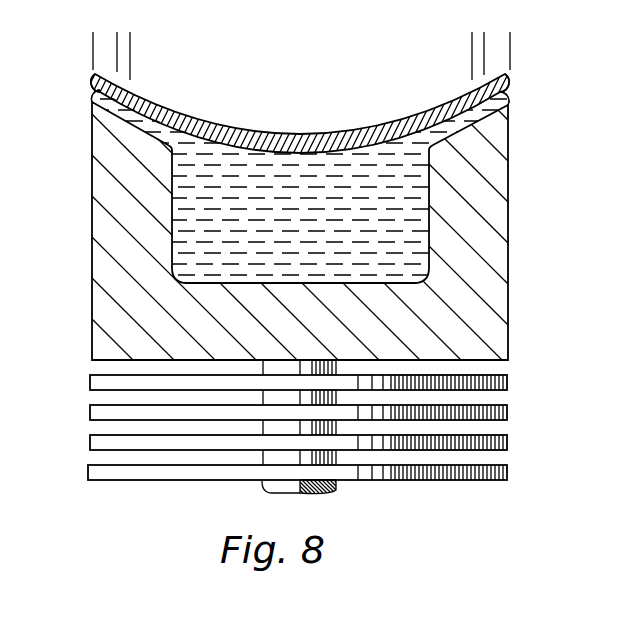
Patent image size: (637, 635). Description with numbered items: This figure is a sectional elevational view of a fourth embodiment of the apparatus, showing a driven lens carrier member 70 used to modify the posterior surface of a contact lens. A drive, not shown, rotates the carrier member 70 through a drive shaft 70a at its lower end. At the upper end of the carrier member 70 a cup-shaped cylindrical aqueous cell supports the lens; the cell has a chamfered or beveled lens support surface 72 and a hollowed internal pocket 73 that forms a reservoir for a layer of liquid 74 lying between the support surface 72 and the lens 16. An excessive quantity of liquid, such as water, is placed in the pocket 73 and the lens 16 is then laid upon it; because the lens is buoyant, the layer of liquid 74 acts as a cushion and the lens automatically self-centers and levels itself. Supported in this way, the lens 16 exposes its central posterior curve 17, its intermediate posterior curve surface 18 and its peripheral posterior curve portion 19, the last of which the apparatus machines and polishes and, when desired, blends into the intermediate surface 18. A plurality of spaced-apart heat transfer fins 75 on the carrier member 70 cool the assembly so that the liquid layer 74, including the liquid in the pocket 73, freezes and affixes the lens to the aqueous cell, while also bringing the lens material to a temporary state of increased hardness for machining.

The lens 16 is at (354, 132).
The central posterior curve 17 is at (510, 30).
The intermediate posterior curve surface 18 is at (302, 37).
The peripheral posterior curve portion 19 is at (302, 35).
The driven lens carrier member 70 is at (516, 207).
The drive shaft 70a is at (336, 491).
The lens support surface 72 is at (121, 108).
The hollowed internal pocket 73 is at (428, 236).
The layer of liquid 74 is at (511, 92).
The heat transfer fins 75 is at (509, 385).